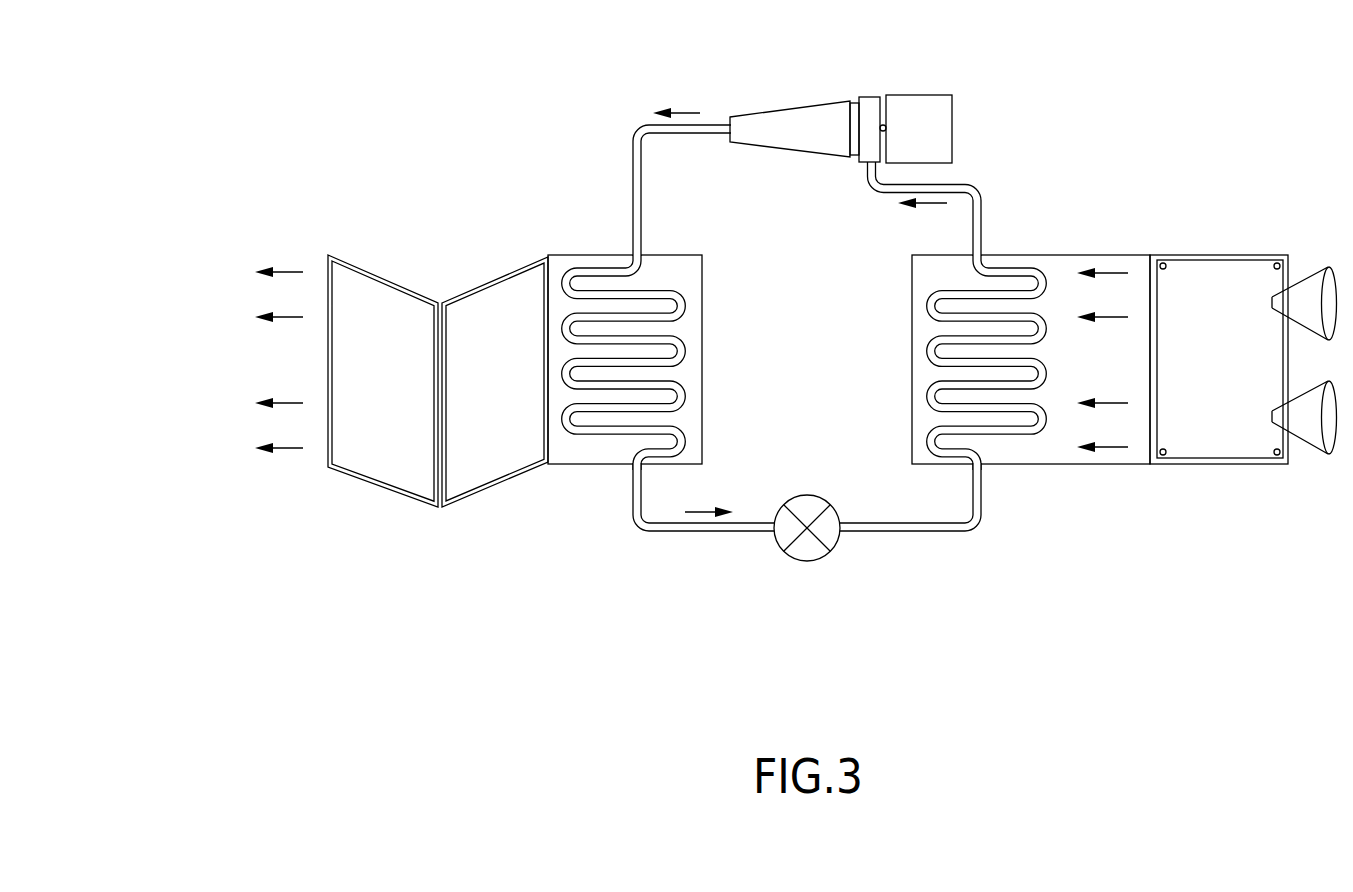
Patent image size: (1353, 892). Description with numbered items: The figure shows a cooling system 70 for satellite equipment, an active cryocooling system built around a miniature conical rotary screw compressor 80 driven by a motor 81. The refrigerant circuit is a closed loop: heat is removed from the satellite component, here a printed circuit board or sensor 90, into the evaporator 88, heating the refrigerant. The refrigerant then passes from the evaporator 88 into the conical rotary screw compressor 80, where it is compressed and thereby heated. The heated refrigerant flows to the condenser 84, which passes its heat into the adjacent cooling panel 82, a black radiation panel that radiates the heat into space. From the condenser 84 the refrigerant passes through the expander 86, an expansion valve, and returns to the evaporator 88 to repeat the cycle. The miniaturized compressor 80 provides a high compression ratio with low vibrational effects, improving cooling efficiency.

The cooling system 70 is at (403, 134).
The miniature conical rotary screw compressor 80 is at (817, 101).
The motor 81 is at (935, 93).
The cooling panel 82 is at (342, 473).
The condenser 84 is at (702, 380).
The expander 86 is at (838, 542).
The evaporator 88 is at (1022, 465).
The printed circuit board or sensor 90 is at (1217, 465).